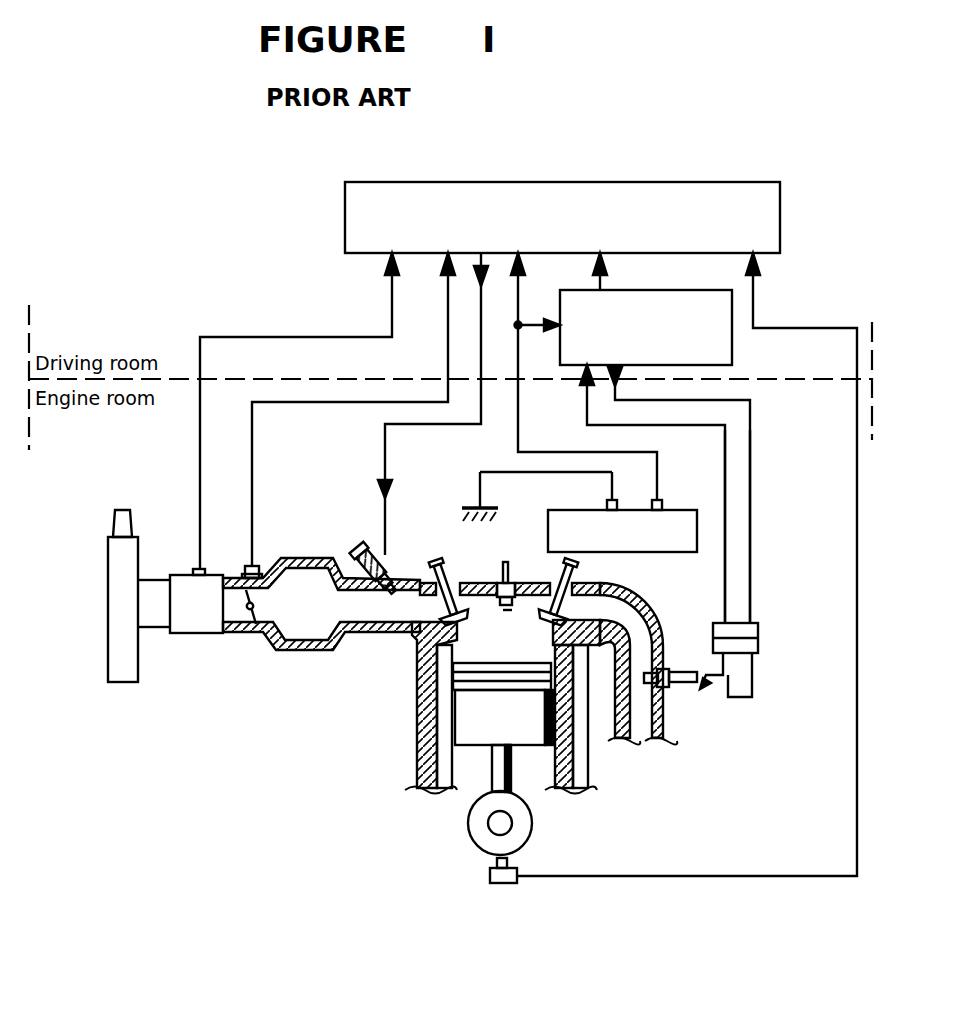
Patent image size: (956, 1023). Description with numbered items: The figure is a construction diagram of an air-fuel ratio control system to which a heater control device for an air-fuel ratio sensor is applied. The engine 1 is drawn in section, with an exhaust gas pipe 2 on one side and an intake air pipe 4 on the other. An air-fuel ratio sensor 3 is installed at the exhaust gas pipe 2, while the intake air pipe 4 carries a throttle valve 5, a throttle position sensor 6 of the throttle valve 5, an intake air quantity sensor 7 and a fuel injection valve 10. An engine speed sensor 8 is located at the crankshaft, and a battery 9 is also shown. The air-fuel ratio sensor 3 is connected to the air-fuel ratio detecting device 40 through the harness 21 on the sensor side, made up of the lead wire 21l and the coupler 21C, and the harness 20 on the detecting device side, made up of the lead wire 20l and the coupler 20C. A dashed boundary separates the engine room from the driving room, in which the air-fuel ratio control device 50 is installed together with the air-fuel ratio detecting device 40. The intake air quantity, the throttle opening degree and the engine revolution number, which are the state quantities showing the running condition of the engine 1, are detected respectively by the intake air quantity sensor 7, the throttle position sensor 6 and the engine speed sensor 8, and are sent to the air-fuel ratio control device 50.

The engine 1 is at (416, 702).
The exhaust gas pipe 2 is at (660, 710).
The air-fuel ratio sensor 3 is at (684, 666).
The intake air pipe 4 is at (312, 650).
The throttle valve 5 is at (247, 633).
The throttle position sensor 6 is at (258, 566).
The intake air quantity sensor 7 is at (201, 634).
The engine speed sensor 8 is at (490, 876).
The battery 9 is at (676, 511).
The fuel injection valve 10 is at (394, 579).
The harness on the air-fuel ratio detecting device side 20 is at (786, 541).
The lead wire 20l is at (798, 543).
The coupler 20C is at (763, 620).
The harness on the sensor side 21 is at (777, 728).
The coupler 21C is at (753, 656).
The lead wire 21l is at (727, 697).
The air-fuel ratio detecting device 40 is at (732, 306).
The air-fuel ratio control device 50 is at (559, 182).